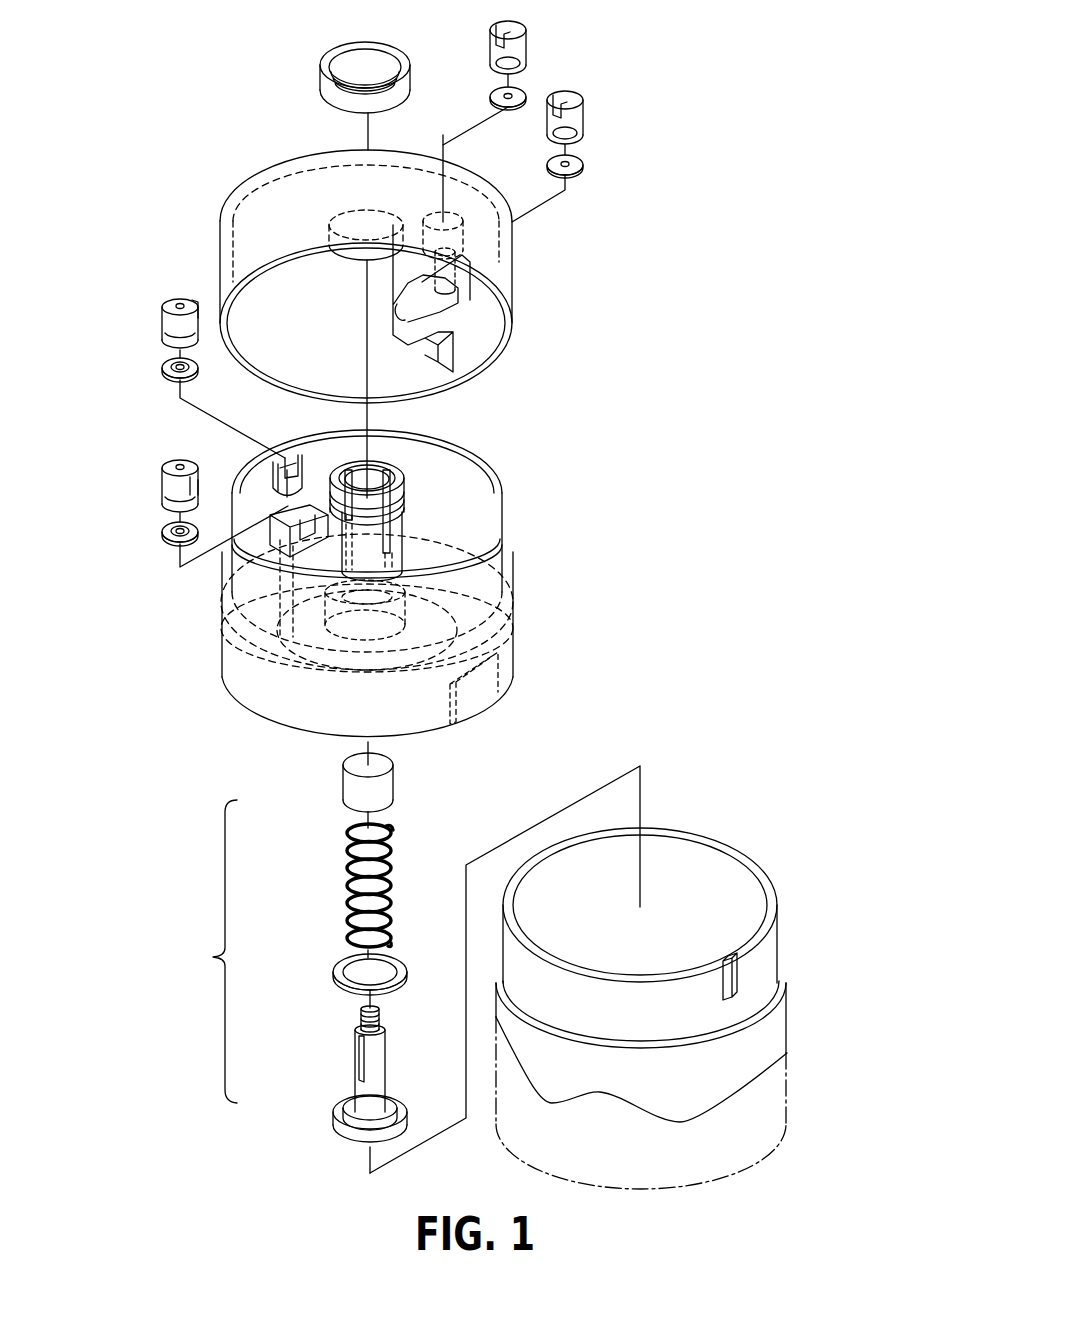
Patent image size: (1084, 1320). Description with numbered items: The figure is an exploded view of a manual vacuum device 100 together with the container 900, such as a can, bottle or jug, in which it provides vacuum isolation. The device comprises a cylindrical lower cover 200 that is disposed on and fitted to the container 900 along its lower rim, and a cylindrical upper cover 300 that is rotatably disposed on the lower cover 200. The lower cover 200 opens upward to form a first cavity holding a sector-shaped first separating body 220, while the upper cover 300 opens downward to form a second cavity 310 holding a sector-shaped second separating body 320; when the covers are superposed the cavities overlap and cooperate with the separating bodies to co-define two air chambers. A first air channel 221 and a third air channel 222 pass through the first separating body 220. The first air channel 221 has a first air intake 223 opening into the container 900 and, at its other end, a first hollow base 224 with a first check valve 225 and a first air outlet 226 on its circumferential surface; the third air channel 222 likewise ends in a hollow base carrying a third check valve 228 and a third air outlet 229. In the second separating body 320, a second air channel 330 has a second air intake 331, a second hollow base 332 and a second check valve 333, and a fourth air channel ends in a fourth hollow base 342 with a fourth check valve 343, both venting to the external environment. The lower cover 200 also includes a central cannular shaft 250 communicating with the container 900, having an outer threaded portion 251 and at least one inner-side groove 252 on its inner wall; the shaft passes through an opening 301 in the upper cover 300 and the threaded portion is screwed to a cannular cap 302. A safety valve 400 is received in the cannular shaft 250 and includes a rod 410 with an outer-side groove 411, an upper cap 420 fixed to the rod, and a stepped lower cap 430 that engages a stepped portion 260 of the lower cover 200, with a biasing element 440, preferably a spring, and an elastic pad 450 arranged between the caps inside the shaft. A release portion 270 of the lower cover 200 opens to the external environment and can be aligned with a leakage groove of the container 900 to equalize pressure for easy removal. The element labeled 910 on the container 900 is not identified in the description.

The manual vacuum device 100 is at (692, 230).
The lower cover 200 is at (517, 553).
The first separating body 220 is at (248, 497).
The first air channel 221 is at (280, 630).
The third air channel 222 is at (283, 458).
The first air intake 223 is at (224, 668).
The first hollow base 224 is at (190, 490).
The first check valve 225 is at (164, 532).
The first air outlet 226 is at (190, 487).
The third check valve 228 is at (164, 367).
The third air outlet 229 is at (188, 302).
The cannular shaft 250 is at (402, 535).
The outer threaded portion 251 is at (412, 485).
The inner-side groove 252 is at (397, 468).
The stepped portion 260 is at (492, 578).
The release portion 270 is at (478, 690).
The upper cover 300 is at (226, 200).
The opening 301 is at (357, 223).
The cannular cap 302 is at (326, 63).
The second cavity 310 is at (310, 350).
The second separating body 320 is at (471, 338).
The second air channel 330 is at (463, 258).
The second air intake 331 is at (398, 322).
The second hollow base 332 is at (510, 33).
The second check valve 333 is at (518, 95).
The fourth hollow base 342 is at (583, 106).
The fourth check valve 343 is at (583, 162).
The safety valve 400 is at (202, 951).
The rod 410 is at (360, 1086).
The outer-side groove 411 is at (358, 1043).
The upper cap 420 is at (344, 789).
The lower cap 430 is at (332, 1119).
The biasing element 440 is at (347, 853).
The elastic pad 450 is at (335, 974).
The container 900 is at (798, 885).
The tab 910 is at (733, 975).